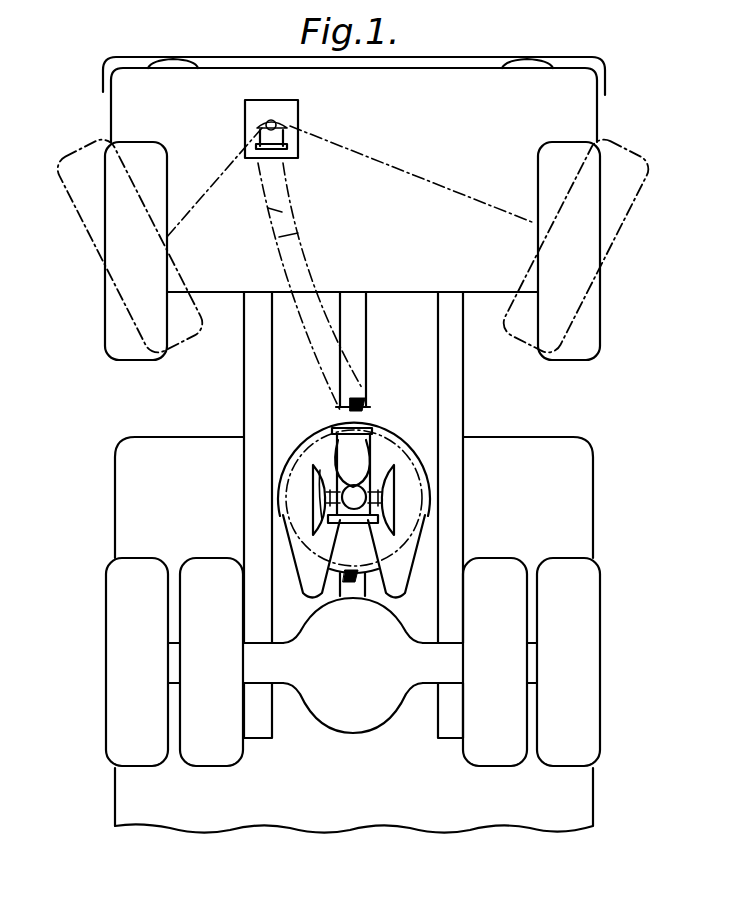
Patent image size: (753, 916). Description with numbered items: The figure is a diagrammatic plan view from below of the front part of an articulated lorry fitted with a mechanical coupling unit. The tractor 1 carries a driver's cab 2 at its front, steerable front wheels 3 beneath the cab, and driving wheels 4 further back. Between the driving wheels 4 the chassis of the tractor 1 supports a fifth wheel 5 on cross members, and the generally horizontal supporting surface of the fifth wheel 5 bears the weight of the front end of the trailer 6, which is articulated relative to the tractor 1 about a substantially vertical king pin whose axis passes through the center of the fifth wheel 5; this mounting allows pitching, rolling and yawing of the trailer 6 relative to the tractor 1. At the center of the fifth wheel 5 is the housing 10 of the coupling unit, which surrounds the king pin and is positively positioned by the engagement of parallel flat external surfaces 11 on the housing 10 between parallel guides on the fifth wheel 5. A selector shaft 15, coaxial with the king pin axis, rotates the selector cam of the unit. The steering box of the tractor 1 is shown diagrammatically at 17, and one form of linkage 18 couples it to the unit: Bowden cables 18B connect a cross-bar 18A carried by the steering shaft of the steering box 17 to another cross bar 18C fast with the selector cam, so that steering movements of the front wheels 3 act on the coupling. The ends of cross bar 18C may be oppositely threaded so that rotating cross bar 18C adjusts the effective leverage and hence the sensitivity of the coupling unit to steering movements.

The tractor 1 is at (466, 381).
The driver's cab 2 is at (487, 285).
The steerable front wheels 3 is at (137, 348).
The driving wheels 4 is at (142, 570).
The fifth wheel 5 is at (393, 552).
The trailer 6 is at (565, 538).
The housing 10 is at (363, 465).
The parallel flat external surfaces 11 is at (385, 520).
The selector shaft 15 is at (360, 426).
The steering box 17 is at (253, 110).
The linkage 18 is at (318, 267).
The cross-bar 18A is at (285, 125).
The Bowden cables 18B is at (293, 213).
The cross bar 18C is at (330, 497).